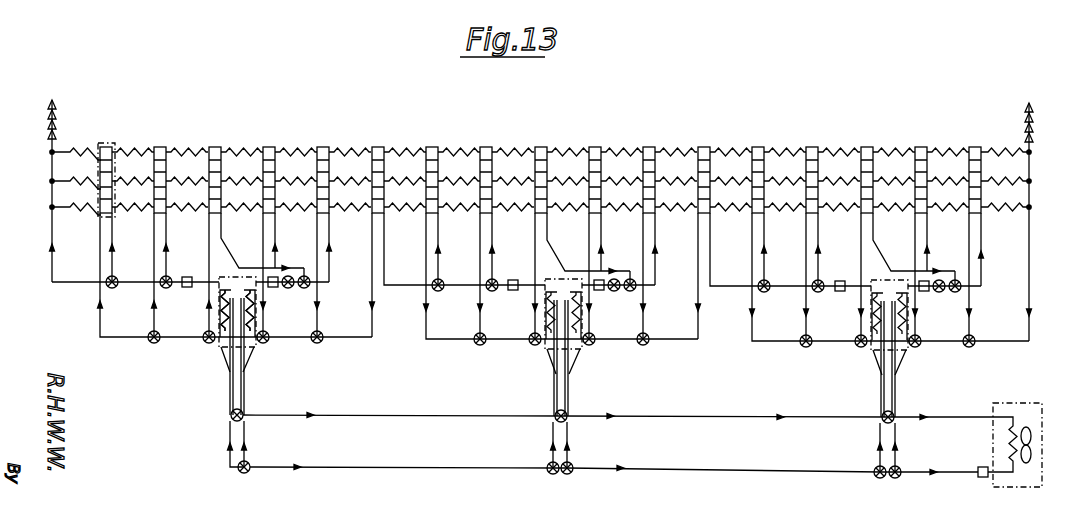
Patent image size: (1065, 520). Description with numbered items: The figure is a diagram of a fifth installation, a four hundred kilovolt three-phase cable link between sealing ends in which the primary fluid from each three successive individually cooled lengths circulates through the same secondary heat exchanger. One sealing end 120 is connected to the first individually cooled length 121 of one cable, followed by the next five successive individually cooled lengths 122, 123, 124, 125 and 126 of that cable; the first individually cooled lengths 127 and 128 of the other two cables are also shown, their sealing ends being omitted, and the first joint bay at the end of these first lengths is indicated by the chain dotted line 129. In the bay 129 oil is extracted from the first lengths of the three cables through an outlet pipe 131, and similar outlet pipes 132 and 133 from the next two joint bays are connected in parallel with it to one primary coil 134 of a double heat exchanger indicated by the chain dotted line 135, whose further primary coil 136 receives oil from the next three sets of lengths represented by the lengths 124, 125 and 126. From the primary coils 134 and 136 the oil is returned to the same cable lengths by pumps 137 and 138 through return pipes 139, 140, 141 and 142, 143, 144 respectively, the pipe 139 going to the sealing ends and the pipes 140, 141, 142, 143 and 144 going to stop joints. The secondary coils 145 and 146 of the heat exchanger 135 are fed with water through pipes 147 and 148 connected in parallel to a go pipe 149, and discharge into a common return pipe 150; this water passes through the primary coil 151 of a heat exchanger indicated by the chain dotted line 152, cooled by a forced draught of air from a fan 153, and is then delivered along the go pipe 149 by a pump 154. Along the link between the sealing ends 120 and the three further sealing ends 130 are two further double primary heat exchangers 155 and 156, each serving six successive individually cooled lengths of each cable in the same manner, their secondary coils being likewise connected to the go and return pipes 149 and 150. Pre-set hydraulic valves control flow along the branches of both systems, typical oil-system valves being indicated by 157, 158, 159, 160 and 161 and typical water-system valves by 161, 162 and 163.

The sealing end 120 is at (56, 114).
The first individually cooled length 121 is at (76, 149).
The individually cooled length 122 is at (138, 150).
The individually cooled length 123 is at (198, 150).
The individually cooled length 124 is at (255, 150).
The individually cooled length 125 is at (310, 150).
The individually cooled length 126 is at (365, 150).
The first individually cooled length 127 is at (80, 181).
The first individually cooled length 128 is at (75, 208).
The first joint bay 129 is at (106, 143).
The further sealing ends 130 is at (1028, 115).
The outlet pipe 131 is at (100, 266).
The outlet pipe 132 is at (154, 236).
The outlet pipe 133 is at (209, 236).
The primary coil 134 is at (222, 290).
The double heat exchanger 135 is at (221, 349).
The further primary coil 136 is at (251, 292).
The pump 137 is at (165, 289).
The pump 138 is at (275, 289).
The return pipe 139 is at (52, 265).
The return pipe 140 is at (112, 266).
The return pipe 141 is at (166, 266).
The return pipe 142 is at (230, 252).
The return pipe 143 is at (275, 235).
The return pipe 144 is at (329, 235).
The secondary coil 145 is at (231, 360).
The secondary coil 146 is at (248, 362).
The pipe 147 is at (230, 404).
The pipe 148 is at (244, 409).
The go pipe 149 is at (266, 469).
The return pipe 150 is at (366, 416).
The primary coil 151 is at (1010, 426).
The heat exchanger 152 is at (1008, 403).
The fan 153 is at (1010, 449).
The pump 154 is at (985, 478).
The double primary heat exchanger 155 is at (572, 354).
The double primary heat exchanger 156 is at (871, 350).
The hydraulic valve 157 is at (152, 343).
The hydraulic valve 158 is at (113, 289).
The hydraulic valve 159 is at (153, 294).
The hydraulic valve 160 is at (207, 341).
The hydraulic valve 161 is at (241, 474).
The hydraulic valve 162 is at (553, 476).
The hydraulic valve 163 is at (879, 478).